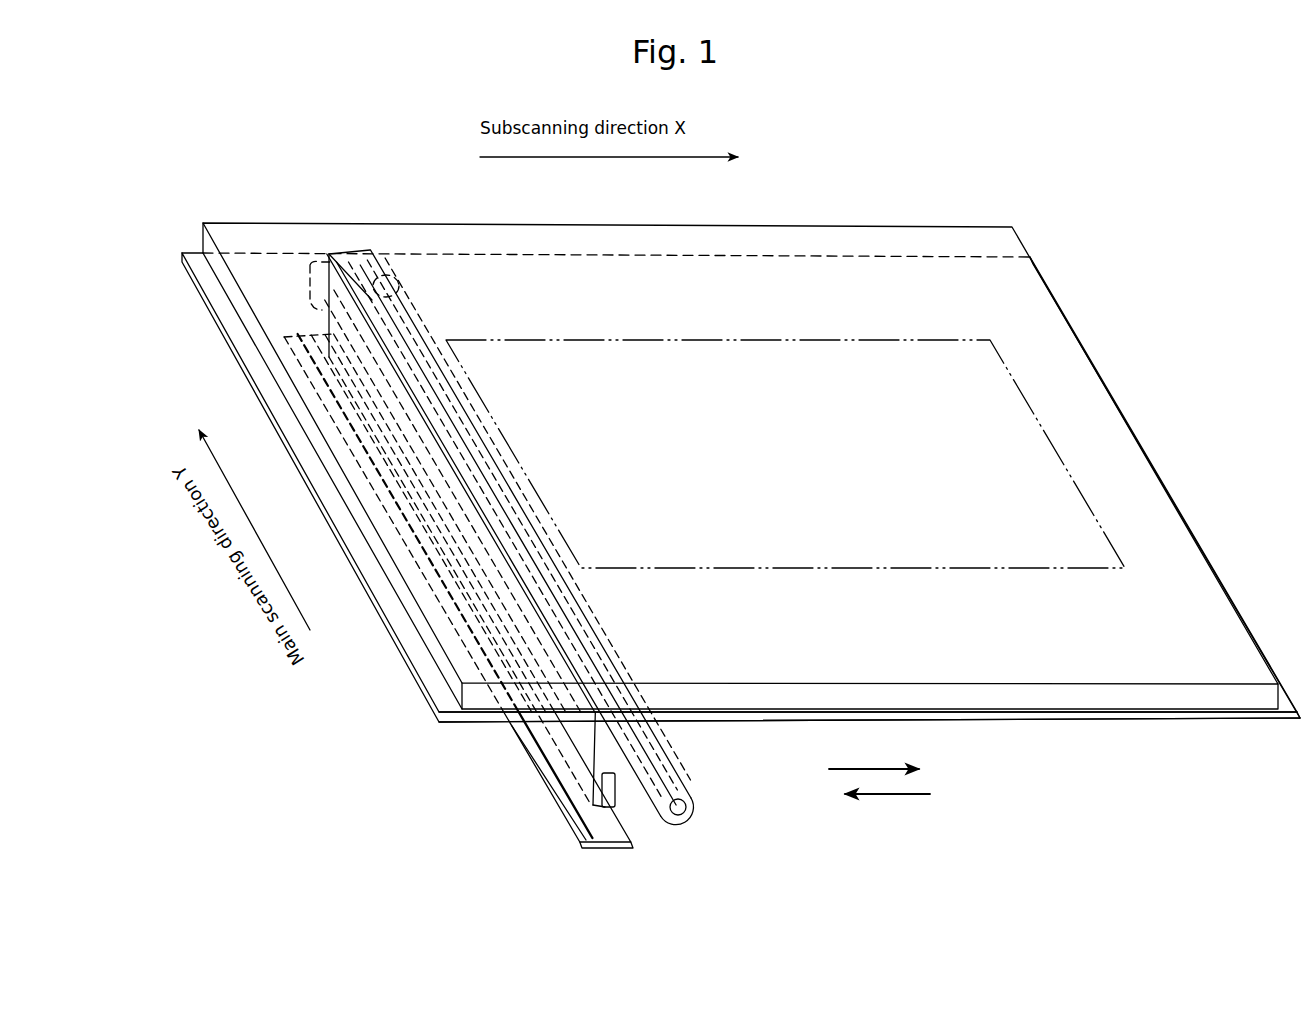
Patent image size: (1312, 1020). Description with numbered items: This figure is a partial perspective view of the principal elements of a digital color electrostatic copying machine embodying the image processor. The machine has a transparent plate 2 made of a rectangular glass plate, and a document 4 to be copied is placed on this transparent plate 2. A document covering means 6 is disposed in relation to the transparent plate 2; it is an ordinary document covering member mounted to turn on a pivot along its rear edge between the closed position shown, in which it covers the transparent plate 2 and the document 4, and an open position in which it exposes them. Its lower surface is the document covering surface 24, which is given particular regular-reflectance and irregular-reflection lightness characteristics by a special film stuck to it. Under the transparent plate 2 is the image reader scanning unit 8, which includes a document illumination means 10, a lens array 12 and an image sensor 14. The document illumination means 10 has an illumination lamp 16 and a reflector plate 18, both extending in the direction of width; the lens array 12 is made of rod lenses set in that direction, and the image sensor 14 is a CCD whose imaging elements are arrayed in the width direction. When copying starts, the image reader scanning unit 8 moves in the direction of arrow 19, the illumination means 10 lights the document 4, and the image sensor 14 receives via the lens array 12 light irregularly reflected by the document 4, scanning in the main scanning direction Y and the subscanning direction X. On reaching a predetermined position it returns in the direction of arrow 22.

The transparent plate 2 is at (962, 723).
The document 4 is at (740, 338).
The document covering means 6 is at (937, 222).
The image reader scanning unit 8 is at (533, 580).
The document illumination means 10 is at (706, 790).
The lens array 12 is at (618, 793).
The image sensor 14 is at (566, 826).
The illumination lamp 16 is at (672, 782).
The reflector plate 18 is at (690, 812).
The arrow 19 is at (860, 769).
The arrow 22 is at (908, 794).
The document covering surface 24 is at (1057, 723).